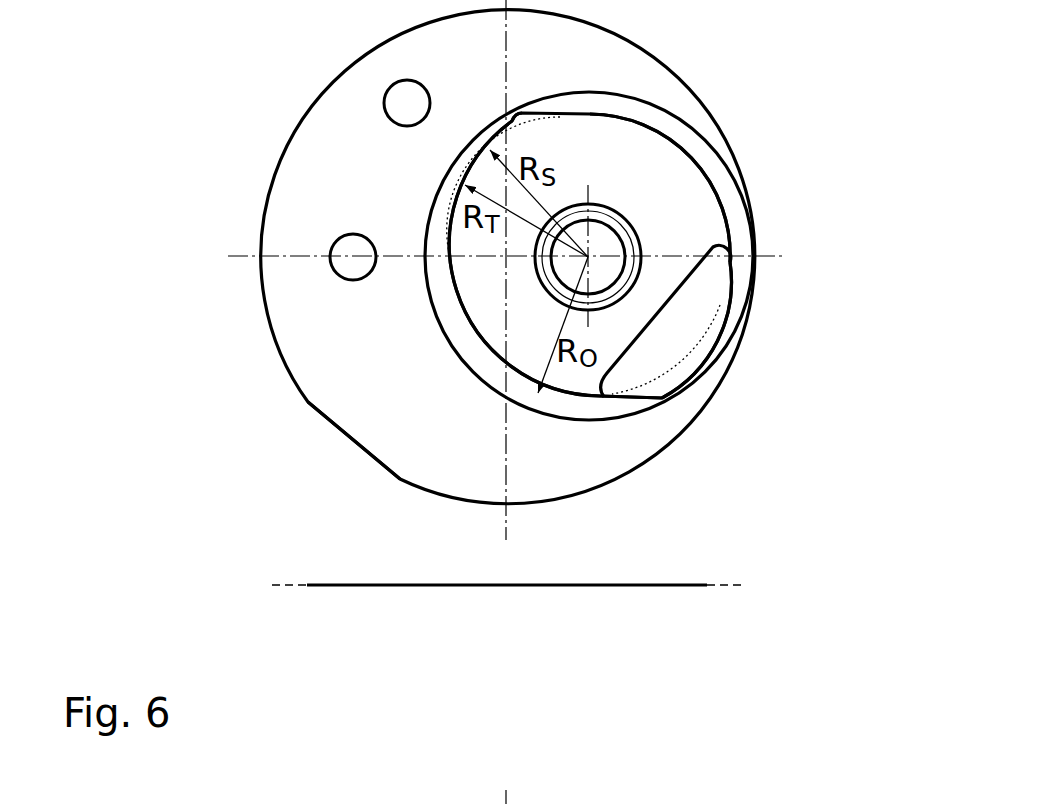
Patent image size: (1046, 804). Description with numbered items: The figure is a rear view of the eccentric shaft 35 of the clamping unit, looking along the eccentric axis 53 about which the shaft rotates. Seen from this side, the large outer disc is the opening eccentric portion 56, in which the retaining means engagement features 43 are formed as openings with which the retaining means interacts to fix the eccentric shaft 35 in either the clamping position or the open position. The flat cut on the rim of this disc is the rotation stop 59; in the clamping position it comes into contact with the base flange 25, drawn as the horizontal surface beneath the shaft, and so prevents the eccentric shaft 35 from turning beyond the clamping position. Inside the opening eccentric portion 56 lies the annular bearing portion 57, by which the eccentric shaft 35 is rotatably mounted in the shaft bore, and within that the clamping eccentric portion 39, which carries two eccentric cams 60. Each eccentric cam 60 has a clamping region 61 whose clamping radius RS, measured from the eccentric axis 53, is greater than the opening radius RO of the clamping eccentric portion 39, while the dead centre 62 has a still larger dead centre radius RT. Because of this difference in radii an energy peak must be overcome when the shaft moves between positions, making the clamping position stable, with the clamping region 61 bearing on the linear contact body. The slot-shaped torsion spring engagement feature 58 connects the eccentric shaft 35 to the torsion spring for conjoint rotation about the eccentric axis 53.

The base flange 25 is at (628, 587).
The eccentric shaft 35 is at (798, 295).
The clamping eccentric portion 39 is at (682, 183).
The retaining means engagement feature 43 is at (395, 100).
The eccentric axis 53 is at (507, 338).
The opening eccentric portion 56 is at (313, 135).
The bearing portion 57 is at (738, 212).
The torsion spring engagement feature 58 is at (722, 335).
The rotation stop 59 is at (313, 413).
The eccentric cam 60 is at (520, 125).
The clamping region 61 is at (470, 163).
The dead centre 62 is at (458, 178).